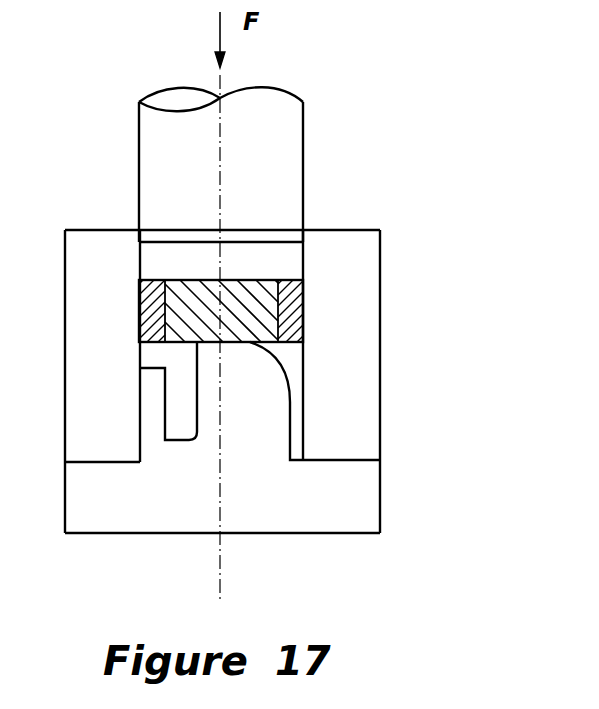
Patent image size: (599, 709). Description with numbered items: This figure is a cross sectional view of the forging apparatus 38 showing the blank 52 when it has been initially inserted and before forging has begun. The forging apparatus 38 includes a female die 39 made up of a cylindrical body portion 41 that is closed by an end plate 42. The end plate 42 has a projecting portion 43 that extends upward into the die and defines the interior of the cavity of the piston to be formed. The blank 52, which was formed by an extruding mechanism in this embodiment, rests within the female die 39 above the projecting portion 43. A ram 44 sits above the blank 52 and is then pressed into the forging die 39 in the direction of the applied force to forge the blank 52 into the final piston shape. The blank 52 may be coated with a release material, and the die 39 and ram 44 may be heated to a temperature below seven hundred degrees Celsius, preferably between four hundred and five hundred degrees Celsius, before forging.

The forging apparatus 38 is at (416, 273).
The female die 39 is at (384, 343).
The cylindrical body portion 41 is at (352, 413).
The end plate 42 is at (368, 497).
The projecting portion 43 is at (268, 443).
The ram 44 is at (286, 153).
The blank 52 is at (165, 278).